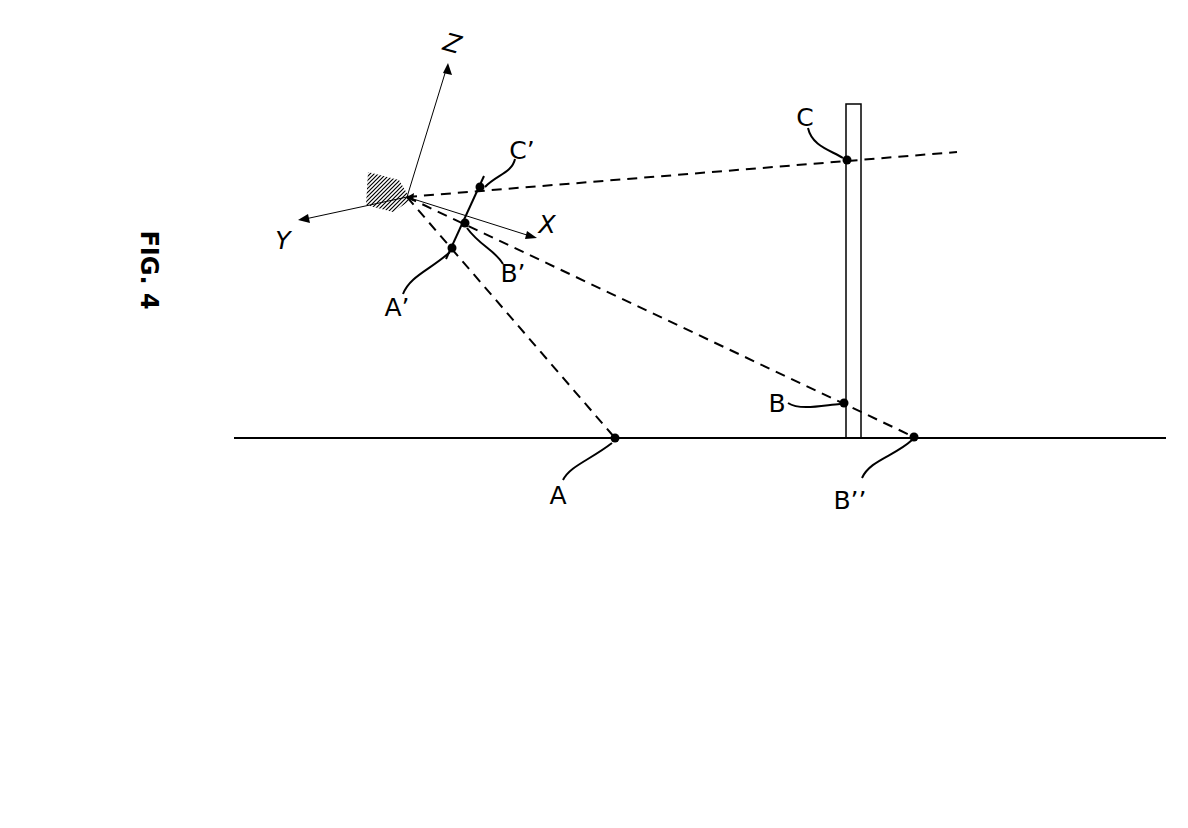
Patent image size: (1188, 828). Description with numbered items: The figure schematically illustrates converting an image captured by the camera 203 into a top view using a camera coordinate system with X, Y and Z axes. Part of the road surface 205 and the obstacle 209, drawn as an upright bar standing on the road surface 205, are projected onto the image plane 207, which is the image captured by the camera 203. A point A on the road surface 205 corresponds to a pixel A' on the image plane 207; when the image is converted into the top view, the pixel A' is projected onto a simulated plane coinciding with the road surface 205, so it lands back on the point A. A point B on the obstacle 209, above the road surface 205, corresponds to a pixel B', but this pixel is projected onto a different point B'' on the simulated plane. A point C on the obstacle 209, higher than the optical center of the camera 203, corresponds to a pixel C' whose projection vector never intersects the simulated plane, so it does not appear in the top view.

The camera 203 is at (398, 178).
The road surface 205 is at (983, 438).
The image plane 207 is at (483, 183).
The obstacle 209 is at (862, 320).